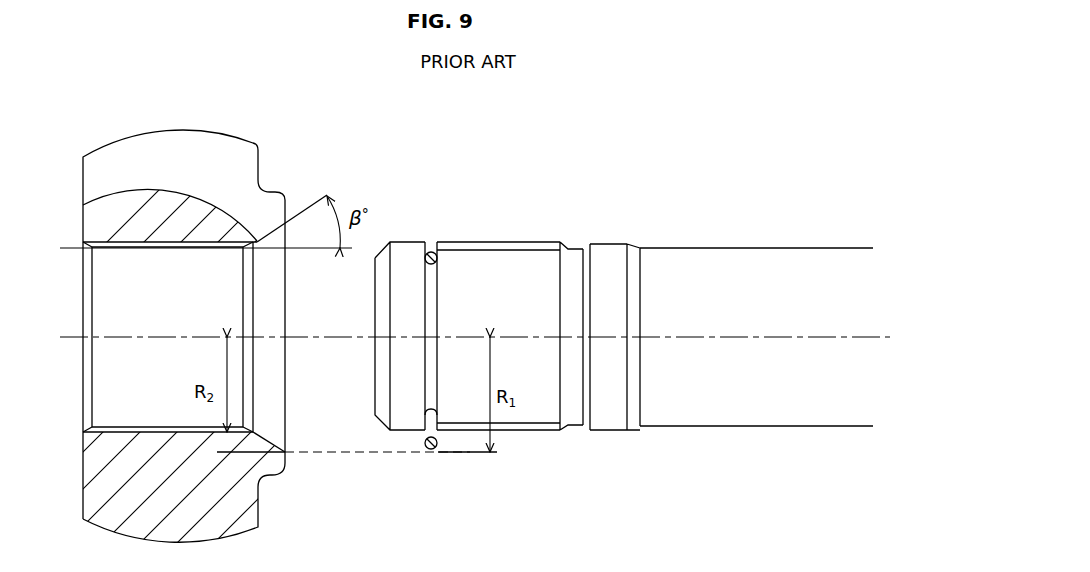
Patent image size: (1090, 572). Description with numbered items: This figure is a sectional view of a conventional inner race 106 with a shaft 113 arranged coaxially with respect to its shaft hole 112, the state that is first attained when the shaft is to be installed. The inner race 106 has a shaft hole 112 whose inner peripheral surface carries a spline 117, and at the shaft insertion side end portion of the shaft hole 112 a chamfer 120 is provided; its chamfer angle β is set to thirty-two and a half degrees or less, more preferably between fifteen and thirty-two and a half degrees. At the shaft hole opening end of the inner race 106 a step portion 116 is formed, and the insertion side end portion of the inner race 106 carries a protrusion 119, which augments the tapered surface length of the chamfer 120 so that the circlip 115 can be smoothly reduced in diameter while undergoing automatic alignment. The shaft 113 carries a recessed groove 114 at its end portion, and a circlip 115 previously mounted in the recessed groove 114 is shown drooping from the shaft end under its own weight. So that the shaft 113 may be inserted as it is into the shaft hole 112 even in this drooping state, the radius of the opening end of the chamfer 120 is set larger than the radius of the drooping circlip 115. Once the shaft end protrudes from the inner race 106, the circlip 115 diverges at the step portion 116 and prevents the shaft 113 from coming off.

The inner race 106 is at (228, 125).
The shaft hole 112 is at (110, 309).
The shaft 113 is at (698, 232).
The recessed groove 114 is at (433, 292).
The circlip 115 is at (430, 252).
The step portion 116 is at (85, 246).
The spline 117 is at (130, 423).
The protrusion 119 is at (270, 472).
The chamfer 120 is at (260, 433).